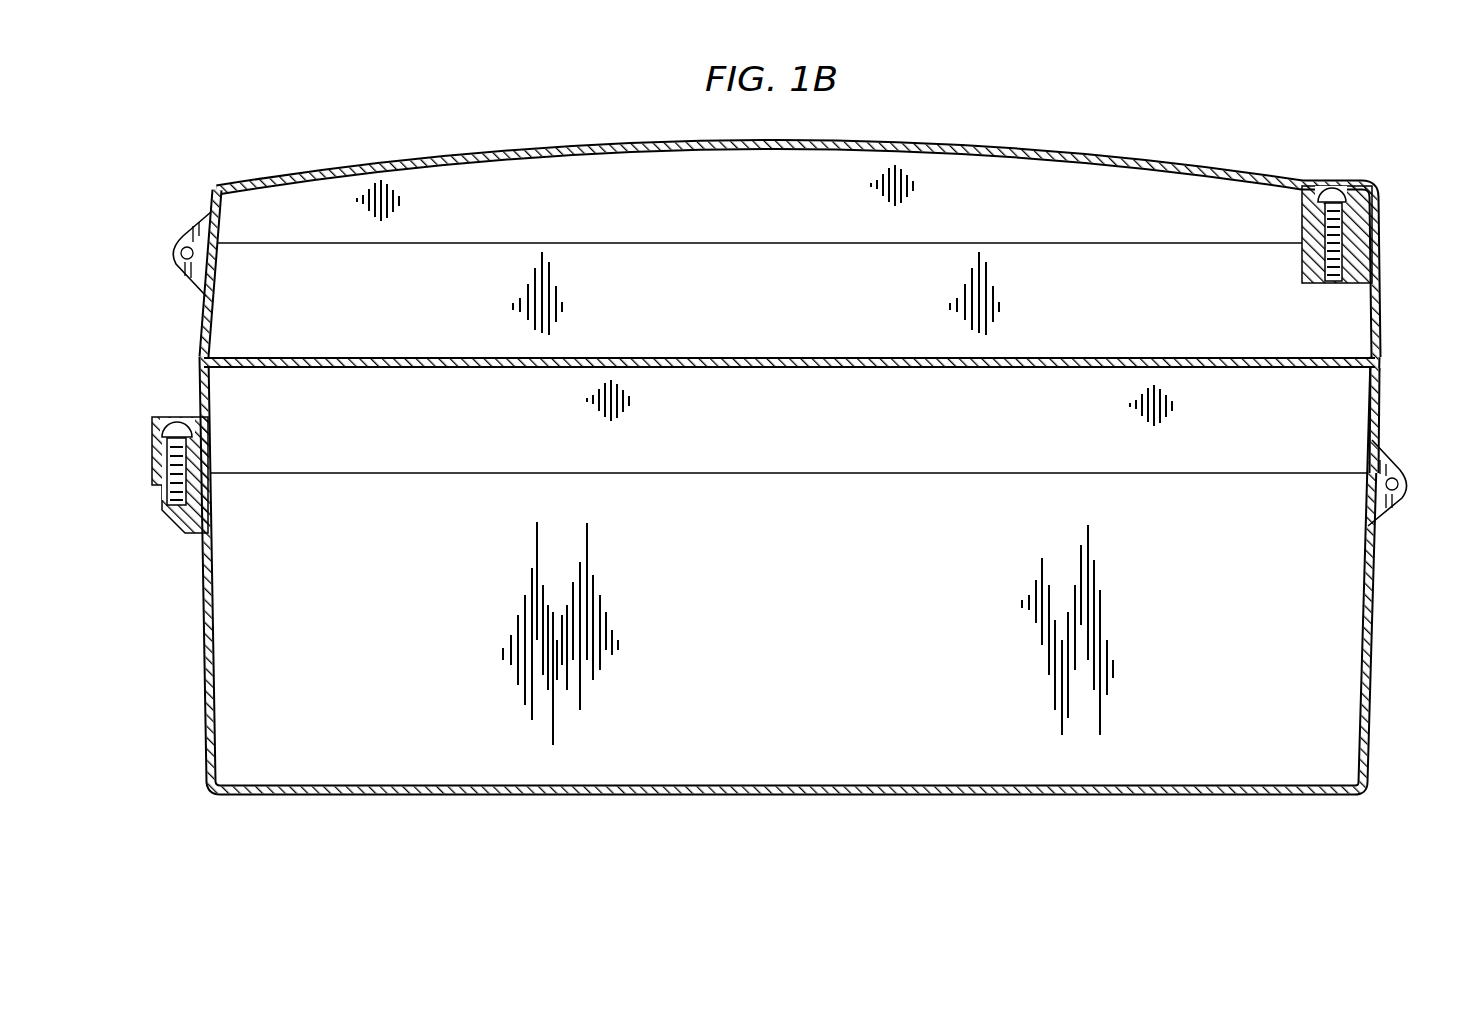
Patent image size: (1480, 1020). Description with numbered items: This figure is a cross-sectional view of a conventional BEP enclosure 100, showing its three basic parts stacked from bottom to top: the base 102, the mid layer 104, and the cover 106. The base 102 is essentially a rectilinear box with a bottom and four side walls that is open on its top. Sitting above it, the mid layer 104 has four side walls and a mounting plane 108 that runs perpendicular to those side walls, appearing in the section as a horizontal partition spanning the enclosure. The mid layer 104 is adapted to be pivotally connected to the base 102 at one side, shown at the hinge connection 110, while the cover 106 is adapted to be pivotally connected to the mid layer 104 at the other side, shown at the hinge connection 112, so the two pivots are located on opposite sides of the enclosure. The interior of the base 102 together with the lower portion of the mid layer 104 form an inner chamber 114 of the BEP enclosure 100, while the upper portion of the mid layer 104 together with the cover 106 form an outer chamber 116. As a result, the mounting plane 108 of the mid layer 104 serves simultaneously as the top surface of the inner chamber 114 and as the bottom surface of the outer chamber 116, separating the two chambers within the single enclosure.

The BEP enclosure 100 is at (1270, 121).
The base 102 is at (1370, 726).
The mid layer 104 is at (1380, 398).
The cover 106 is at (400, 160).
The mounting plane 108 is at (1336, 358).
The pivotal connection of mid layer to base 110 is at (1408, 492).
The pivotal connection of cover to mid layer 112 is at (178, 243).
The inner chamber 114 is at (808, 652).
The outer chamber 116 is at (808, 320).